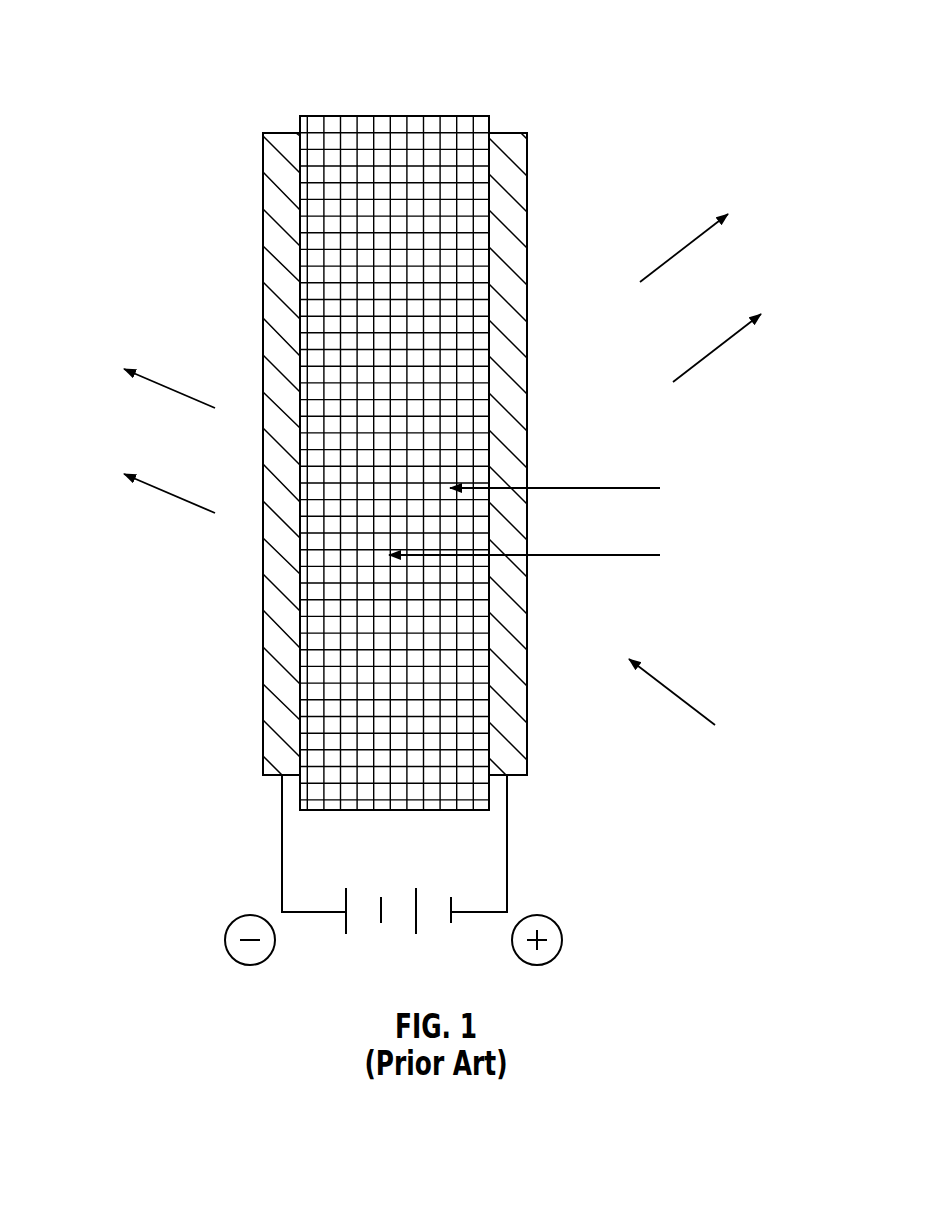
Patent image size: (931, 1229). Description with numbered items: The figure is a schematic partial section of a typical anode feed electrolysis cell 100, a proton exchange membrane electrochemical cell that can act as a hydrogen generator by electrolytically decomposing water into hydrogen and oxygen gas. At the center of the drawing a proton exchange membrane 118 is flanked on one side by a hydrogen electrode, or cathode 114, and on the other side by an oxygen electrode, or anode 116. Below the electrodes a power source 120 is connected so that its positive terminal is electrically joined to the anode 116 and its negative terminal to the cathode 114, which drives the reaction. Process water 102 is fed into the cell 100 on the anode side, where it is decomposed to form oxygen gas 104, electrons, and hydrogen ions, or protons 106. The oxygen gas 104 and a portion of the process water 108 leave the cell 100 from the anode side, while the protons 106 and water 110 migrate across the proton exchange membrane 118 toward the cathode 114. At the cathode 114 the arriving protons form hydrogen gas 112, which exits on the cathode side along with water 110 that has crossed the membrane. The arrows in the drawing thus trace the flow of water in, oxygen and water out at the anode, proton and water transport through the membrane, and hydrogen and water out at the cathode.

The anode feed electrolysis cell 100 is at (168, 60).
The process water 102 is at (705, 713).
The oxygen gas 104 is at (692, 243).
The hydrogen ions (protons) 106 is at (645, 487).
The portion of the process water 108 is at (705, 357).
The water 110 is at (645, 557).
The hydrogen gas 112 is at (188, 397).
The hydrogen electrode (cathode) 114 is at (288, 134).
The oxygen electrode (anode) 116 is at (508, 133).
The proton exchange membrane 118 is at (396, 116).
The power source 120 is at (524, 840).